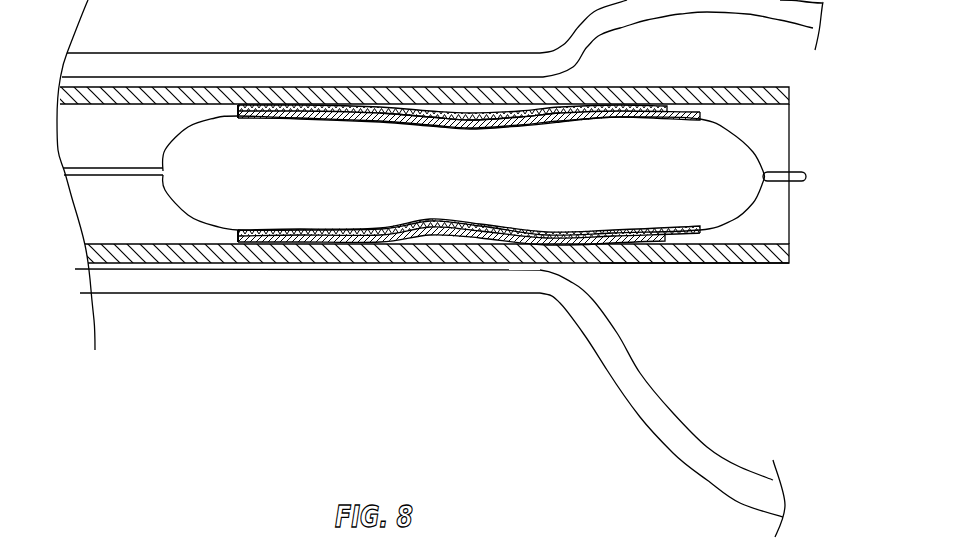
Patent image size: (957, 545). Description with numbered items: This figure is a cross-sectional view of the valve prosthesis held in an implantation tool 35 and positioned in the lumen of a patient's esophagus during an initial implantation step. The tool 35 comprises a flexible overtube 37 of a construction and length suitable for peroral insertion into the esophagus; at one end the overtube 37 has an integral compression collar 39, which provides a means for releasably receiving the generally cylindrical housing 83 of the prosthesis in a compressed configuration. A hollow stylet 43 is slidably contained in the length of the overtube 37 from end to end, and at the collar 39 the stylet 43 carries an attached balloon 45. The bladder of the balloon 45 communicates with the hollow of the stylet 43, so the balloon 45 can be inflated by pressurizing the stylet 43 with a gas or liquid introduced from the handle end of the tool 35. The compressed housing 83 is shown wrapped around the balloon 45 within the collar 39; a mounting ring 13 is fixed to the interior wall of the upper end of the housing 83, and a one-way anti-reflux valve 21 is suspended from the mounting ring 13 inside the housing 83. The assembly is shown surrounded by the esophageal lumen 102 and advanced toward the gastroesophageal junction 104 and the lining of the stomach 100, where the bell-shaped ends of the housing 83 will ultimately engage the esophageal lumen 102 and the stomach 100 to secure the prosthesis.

The stomach 100 is at (772, 387).
The esophageal lumen 102 is at (227, 286).
The gastroesophageal junction 104 is at (603, 337).
The implantation tool 35 is at (162, 245).
The flexible overtube 37 is at (697, 265).
The hollow stylet 43 is at (93, 170).
The balloon 45 is at (688, 195).
The mounting ring 13 is at (290, 107).
The one-way valve 21 is at (690, 110).
The cylindrical housing 83 is at (405, 110).
The compression collar 39 is at (427, 245).